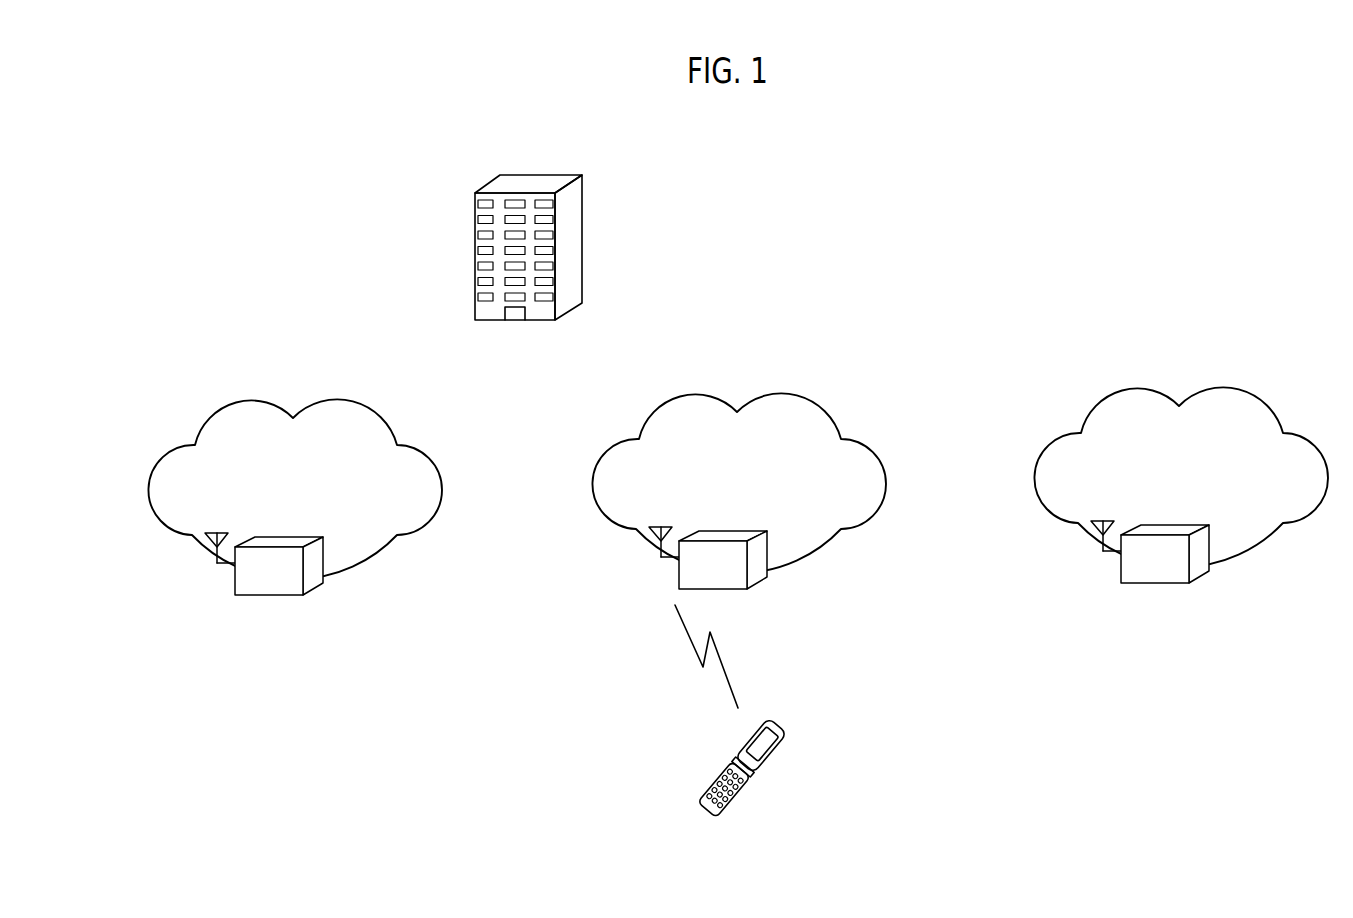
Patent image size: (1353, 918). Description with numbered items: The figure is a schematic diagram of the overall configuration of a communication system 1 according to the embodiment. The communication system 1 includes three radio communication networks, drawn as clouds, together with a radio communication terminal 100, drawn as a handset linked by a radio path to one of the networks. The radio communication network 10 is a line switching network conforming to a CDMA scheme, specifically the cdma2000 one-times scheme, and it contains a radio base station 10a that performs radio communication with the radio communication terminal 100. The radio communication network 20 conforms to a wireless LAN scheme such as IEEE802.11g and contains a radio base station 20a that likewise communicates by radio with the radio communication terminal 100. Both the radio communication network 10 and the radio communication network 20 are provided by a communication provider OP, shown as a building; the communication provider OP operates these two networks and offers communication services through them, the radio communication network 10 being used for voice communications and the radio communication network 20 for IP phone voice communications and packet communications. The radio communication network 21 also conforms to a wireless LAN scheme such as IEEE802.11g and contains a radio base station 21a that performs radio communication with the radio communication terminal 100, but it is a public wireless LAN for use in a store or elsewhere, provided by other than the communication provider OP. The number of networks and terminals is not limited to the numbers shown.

The communication system 1 is at (1170, 218).
The communication provider OP is at (533, 182).
The radio communication network 10 is at (328, 400).
The radio base station 10a is at (287, 545).
The radio communication network 20 is at (768, 393).
The radio base station 20a is at (728, 538).
The radio communication network 21 is at (1210, 390).
The radio base station 21a is at (1172, 530).
The radio communication terminal 100 is at (776, 747).